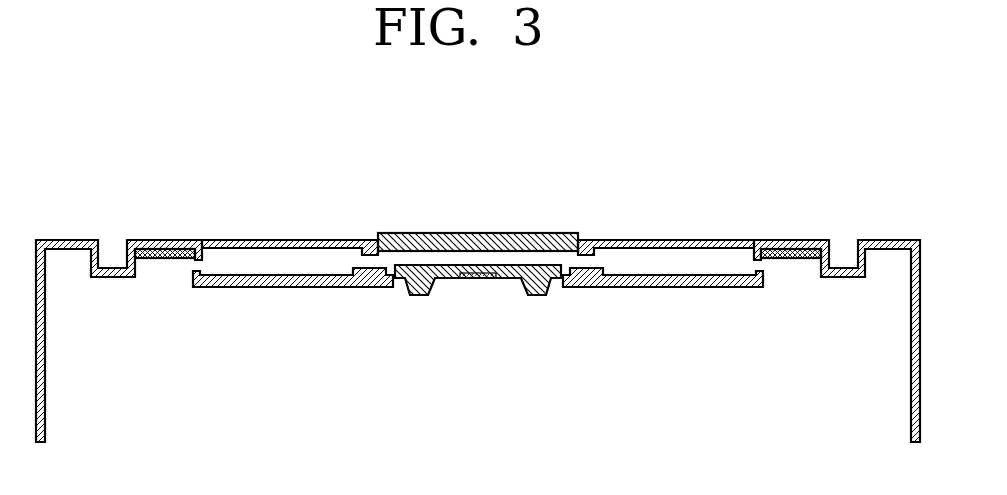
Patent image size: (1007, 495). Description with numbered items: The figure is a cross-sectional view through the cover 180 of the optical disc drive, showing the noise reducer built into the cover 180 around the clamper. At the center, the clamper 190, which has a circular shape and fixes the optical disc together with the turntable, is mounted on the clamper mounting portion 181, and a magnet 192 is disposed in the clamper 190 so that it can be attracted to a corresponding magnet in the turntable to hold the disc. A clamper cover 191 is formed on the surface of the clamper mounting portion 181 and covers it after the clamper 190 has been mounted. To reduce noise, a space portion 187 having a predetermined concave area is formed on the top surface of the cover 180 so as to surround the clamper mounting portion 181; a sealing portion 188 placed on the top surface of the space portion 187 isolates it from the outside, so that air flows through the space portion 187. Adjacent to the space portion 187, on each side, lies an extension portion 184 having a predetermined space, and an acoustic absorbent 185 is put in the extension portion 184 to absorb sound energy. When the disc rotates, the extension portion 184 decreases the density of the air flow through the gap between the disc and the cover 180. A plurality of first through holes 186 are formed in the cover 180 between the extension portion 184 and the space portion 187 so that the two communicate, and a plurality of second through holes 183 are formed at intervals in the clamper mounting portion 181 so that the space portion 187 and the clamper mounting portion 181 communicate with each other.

The cover 180 is at (45, 402).
The clamper mounting portion 181 is at (369, 281).
The second through holes 183 is at (363, 263).
The extension portion 184 is at (145, 267).
The acoustic absorbent 185 is at (163, 256).
The first through holes 186 is at (195, 268).
The space portion 187 is at (305, 272).
The sealing portion 188 is at (285, 243).
The clamper 190 is at (530, 280).
The clamper cover 191 is at (478, 240).
The magnet 192 is at (478, 278).